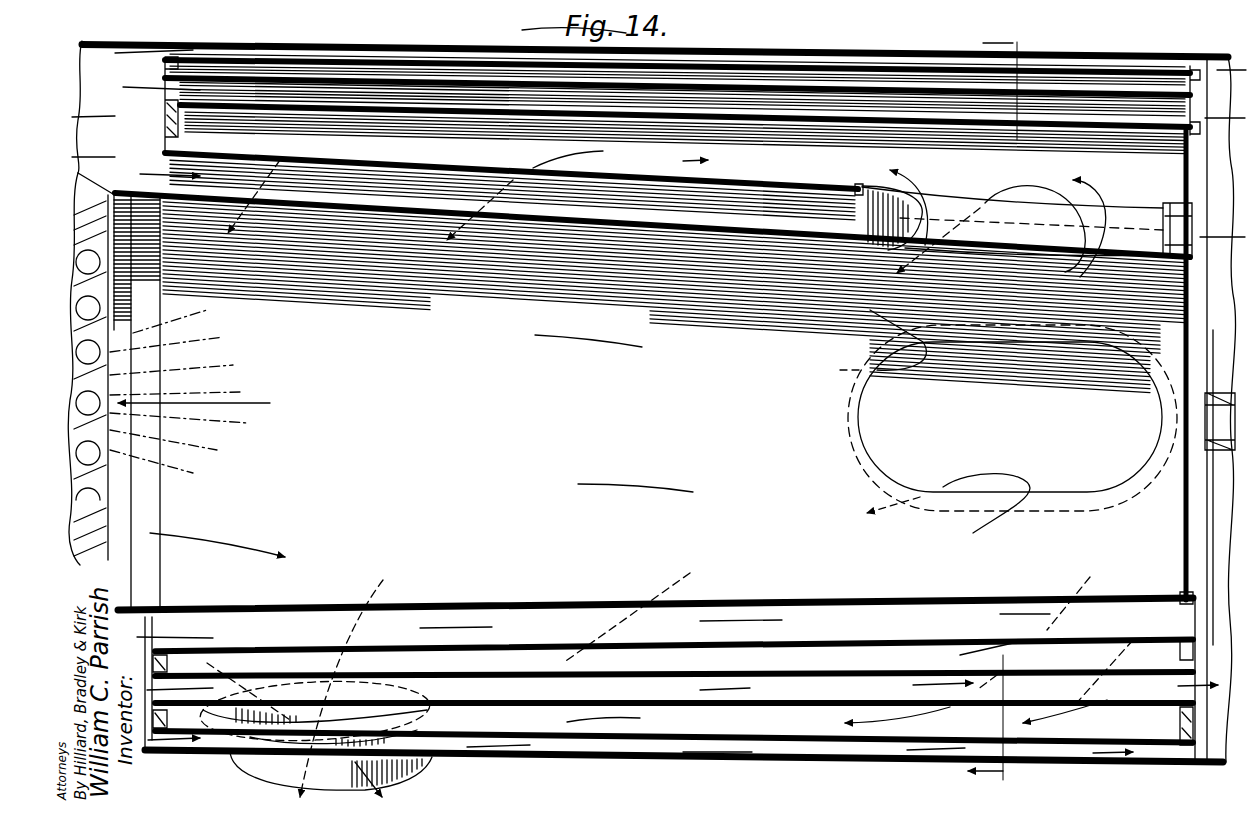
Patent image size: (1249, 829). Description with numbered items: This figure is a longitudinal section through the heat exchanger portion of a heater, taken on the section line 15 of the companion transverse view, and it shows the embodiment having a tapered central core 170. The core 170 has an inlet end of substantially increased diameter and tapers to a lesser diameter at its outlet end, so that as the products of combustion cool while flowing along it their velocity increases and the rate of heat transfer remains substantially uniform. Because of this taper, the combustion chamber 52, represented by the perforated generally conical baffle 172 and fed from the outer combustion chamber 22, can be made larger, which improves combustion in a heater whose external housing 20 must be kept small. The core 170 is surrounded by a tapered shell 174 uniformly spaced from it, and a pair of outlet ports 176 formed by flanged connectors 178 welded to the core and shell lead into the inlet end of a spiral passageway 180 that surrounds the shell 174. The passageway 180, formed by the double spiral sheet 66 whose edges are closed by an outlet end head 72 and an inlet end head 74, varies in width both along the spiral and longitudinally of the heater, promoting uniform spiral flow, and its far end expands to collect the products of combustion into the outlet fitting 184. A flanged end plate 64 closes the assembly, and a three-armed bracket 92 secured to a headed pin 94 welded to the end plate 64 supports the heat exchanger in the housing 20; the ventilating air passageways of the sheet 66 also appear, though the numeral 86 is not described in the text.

The section line 15 is at (1004, 411).
The external housing 20 is at (1103, 50).
The outer combustion chamber 22 is at (113, 190).
The combustion chamber 52 is at (401, 433).
The flanged end plate 64 is at (1183, 547).
The double spiral sheet 66 is at (767, 762).
The outlet end head 72 is at (1185, 723).
The inlet end head 74 is at (166, 719).
The lower baffle plate 86 is at (838, 762).
The three-armed bracket 92 is at (1215, 519).
The headed pin 94 is at (1208, 413).
The central core 170 is at (511, 195).
The perforated generally conical baffle 172 is at (121, 194).
The tapered shell 174 is at (780, 190).
The outlet ports 176 is at (1121, 228).
The flanged connectors 178 is at (868, 192).
The spiral passageway 180 is at (800, 78).
The outlet fitting 184 is at (420, 783).